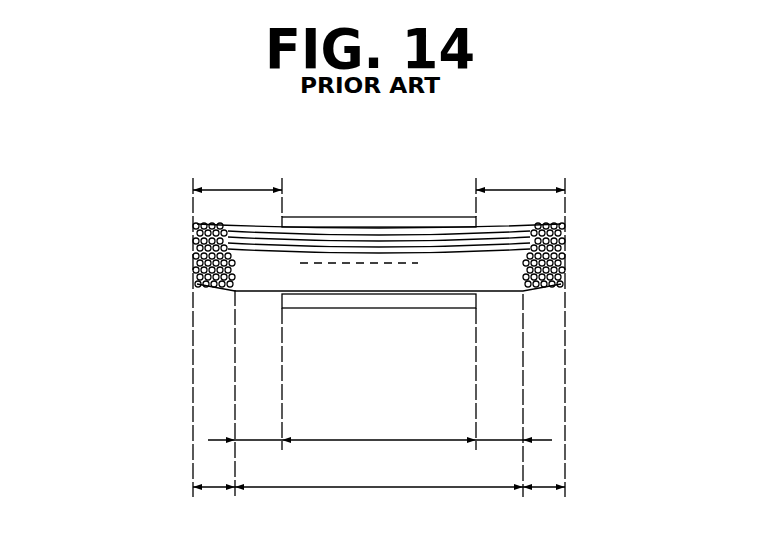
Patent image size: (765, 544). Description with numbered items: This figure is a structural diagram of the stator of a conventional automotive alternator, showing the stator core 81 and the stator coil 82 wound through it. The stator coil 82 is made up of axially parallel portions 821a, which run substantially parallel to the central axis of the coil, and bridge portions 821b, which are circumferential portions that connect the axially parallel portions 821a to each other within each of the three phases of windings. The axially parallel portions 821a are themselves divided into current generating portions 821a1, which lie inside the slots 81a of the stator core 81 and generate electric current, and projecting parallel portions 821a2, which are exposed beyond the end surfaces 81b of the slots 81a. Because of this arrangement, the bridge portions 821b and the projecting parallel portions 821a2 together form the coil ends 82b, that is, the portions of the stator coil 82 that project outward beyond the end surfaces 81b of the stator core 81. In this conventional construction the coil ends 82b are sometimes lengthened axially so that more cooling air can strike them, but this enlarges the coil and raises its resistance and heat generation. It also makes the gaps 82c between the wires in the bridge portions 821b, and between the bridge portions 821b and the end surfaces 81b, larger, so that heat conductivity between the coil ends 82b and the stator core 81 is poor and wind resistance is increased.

The stator core 81 is at (357, 222).
The slots 81a is at (415, 226).
The end surfaces 81b is at (282, 300).
The stator coil 82 is at (190, 254).
The coil ends 82b is at (379, 175).
The gaps 82c is at (263, 272).
The axially parallel portions 821a is at (379, 475).
The current generating portions 821a1 is at (379, 426).
The projecting parallel portions 821a2 is at (258, 438).
The bridge portions 821b is at (217, 486).